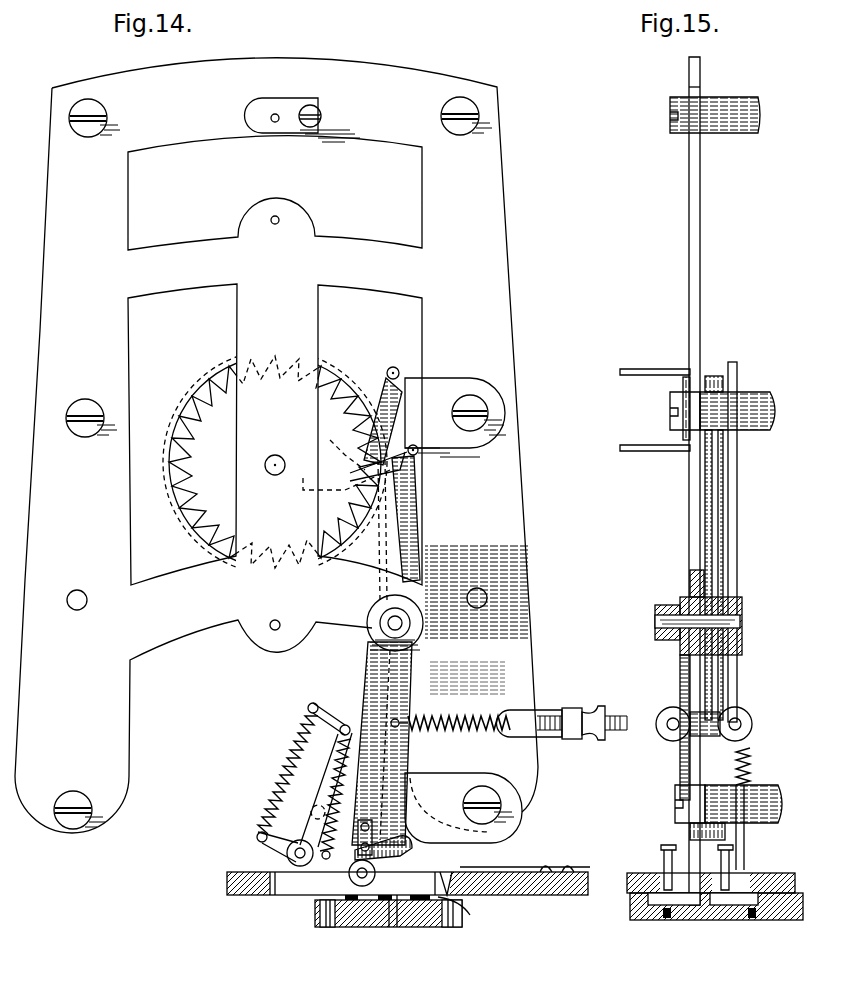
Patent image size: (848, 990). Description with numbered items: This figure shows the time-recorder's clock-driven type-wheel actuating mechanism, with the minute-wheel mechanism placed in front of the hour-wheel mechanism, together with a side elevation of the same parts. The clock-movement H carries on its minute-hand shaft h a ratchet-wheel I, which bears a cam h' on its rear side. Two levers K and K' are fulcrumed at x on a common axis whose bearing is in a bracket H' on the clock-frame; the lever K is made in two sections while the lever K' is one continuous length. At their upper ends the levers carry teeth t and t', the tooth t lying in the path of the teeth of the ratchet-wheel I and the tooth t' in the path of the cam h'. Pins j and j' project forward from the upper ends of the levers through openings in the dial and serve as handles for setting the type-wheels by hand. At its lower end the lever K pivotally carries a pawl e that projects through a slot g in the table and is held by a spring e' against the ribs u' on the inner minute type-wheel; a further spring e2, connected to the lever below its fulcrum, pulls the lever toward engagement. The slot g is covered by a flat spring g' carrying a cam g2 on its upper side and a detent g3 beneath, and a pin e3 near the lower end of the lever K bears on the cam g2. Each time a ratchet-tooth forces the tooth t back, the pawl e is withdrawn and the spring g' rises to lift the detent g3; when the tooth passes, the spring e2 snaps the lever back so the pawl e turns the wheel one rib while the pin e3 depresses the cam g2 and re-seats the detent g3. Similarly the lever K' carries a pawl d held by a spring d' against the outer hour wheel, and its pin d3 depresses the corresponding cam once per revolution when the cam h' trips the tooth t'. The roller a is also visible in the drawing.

In FIG. 14, the clock-movement H is at (276, 450).
In FIG. 14, the bracket H' is at (455, 399).
In FIG. 15, the bracket H' is at (722, 403).
In FIG. 14, the ratchet-wheel I is at (348, 385).
In FIG. 14, the pin j is at (417, 464).
In FIG. 15, the pin j is at (671, 282).
In FIG. 14, the pin j' is at (395, 356).
In FIG. 14, the tooth t is at (394, 436).
In FIG. 14, the tooth t' is at (324, 431).
In FIG. 14, the minute-hand shaft h is at (275, 462).
In FIG. 14, the cam h' is at (340, 466).
In FIG. 14, the lever K is at (417, 528).
In FIG. 15, the lever K is at (681, 575).
In FIG. 14, the lever K' is at (365, 743).
In FIG. 15, the lever K' is at (754, 542).
In FIG. 14, the fulcrum x is at (403, 623).
In FIG. 15, the fulcrum x is at (668, 620).
In FIG. 14, the spring e2 is at (446, 721).
In FIG. 14, the spring d' is at (278, 772).
In FIG. 15, the spring d' is at (658, 727).
In FIG. 14, the pin d3 is at (315, 828).
In FIG. 14, the spring e' is at (341, 799).
In FIG. 15, the spring e' is at (760, 765).
In FIG. 14, the pin e3 is at (358, 845).
In FIG. 14, the cam g2 is at (412, 858).
In FIG. 14, the detent g3 is at (470, 880).
In FIG. 14, the flat spring g' is at (408, 869).
In FIG. 15, the flat spring g' is at (715, 896).
In FIG. 14, the slot g is at (253, 909).
In FIG. 14, the roller a is at (320, 876).
In FIG. 15, the roller a is at (704, 724).
In FIG. 14, the ribs u' is at (406, 926).
In FIG. 14, the pawl e is at (391, 926).
In FIG. 15, the pawl e is at (721, 837).
In FIG. 15, the pawl d is at (682, 505).